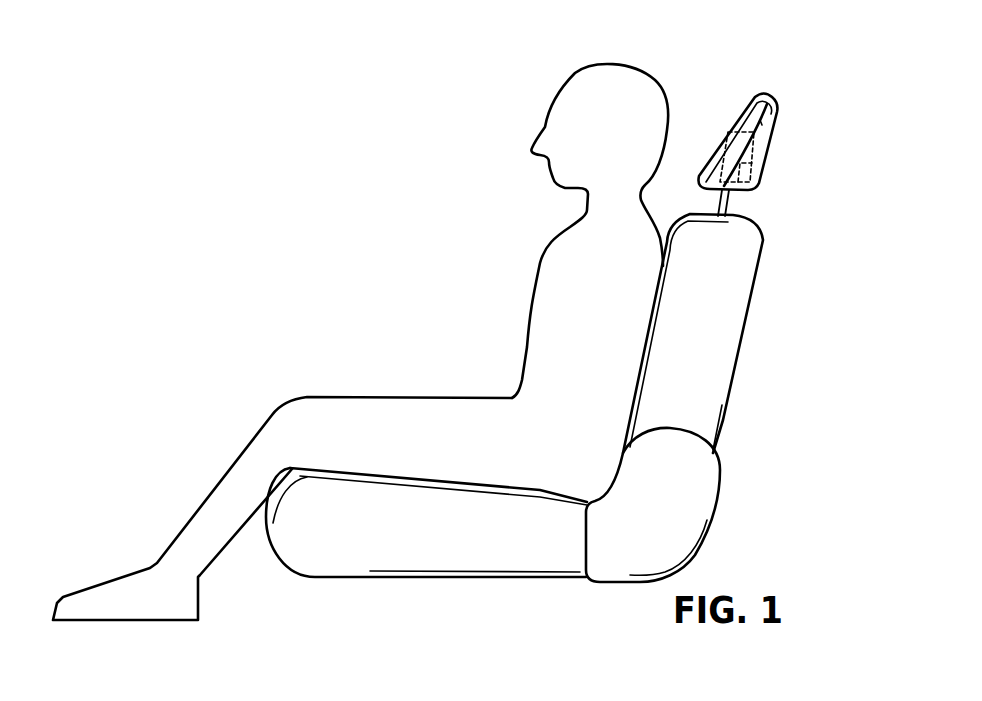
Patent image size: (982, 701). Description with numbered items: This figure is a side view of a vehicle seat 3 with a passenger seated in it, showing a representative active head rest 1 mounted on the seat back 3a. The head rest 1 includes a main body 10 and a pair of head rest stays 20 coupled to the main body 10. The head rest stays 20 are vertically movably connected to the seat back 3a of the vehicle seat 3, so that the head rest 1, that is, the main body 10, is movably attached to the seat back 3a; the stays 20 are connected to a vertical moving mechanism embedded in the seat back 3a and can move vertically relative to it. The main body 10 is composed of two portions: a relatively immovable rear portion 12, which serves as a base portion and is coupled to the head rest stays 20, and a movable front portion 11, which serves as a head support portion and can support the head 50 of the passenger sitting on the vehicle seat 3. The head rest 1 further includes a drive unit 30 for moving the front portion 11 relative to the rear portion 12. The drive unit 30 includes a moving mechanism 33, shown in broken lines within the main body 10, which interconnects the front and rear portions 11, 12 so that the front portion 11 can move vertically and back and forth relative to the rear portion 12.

The head rest 1 is at (802, 133).
The vehicle seat 3 is at (548, 365).
The seat back 3a is at (733, 342).
The main body 10 is at (802, 117).
The front portion 11 is at (718, 145).
The rear portion 12 is at (762, 128).
The head rest stays 20 is at (730, 195).
The drive unit 30 is at (823, 157).
The moving mechanism 33 is at (767, 155).
The head 50 is at (605, 80).